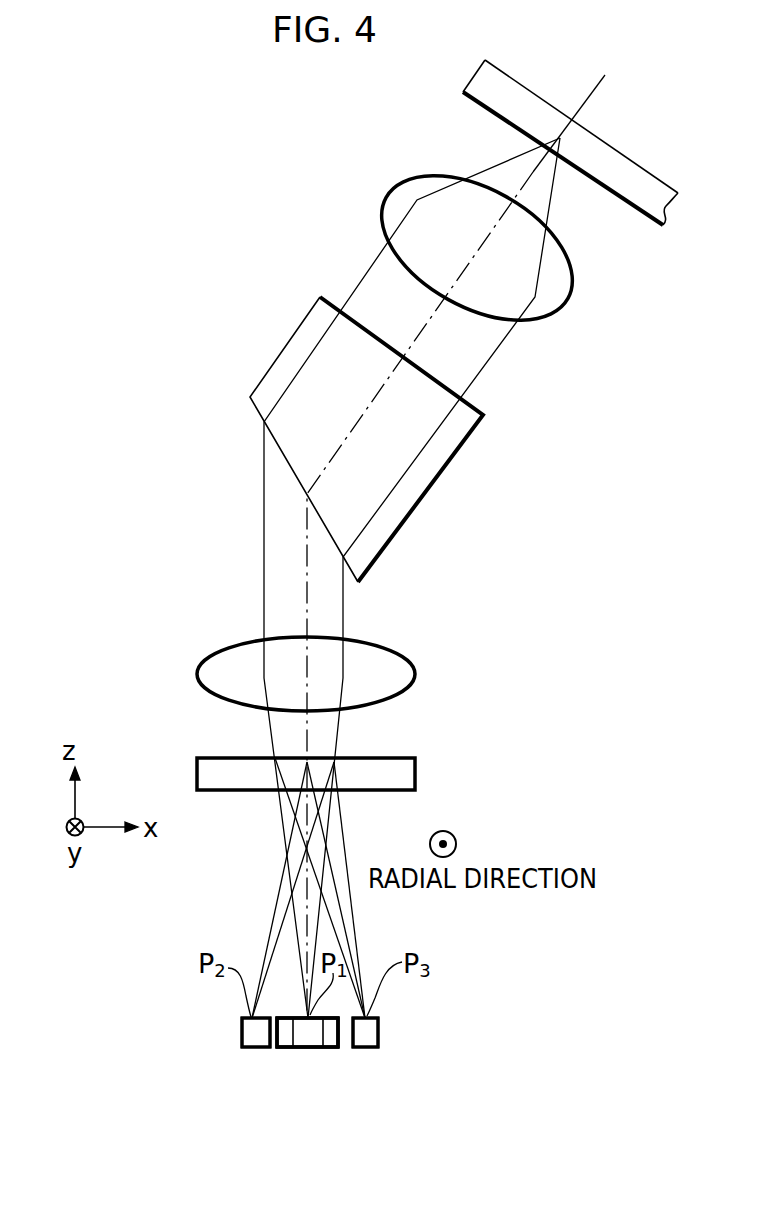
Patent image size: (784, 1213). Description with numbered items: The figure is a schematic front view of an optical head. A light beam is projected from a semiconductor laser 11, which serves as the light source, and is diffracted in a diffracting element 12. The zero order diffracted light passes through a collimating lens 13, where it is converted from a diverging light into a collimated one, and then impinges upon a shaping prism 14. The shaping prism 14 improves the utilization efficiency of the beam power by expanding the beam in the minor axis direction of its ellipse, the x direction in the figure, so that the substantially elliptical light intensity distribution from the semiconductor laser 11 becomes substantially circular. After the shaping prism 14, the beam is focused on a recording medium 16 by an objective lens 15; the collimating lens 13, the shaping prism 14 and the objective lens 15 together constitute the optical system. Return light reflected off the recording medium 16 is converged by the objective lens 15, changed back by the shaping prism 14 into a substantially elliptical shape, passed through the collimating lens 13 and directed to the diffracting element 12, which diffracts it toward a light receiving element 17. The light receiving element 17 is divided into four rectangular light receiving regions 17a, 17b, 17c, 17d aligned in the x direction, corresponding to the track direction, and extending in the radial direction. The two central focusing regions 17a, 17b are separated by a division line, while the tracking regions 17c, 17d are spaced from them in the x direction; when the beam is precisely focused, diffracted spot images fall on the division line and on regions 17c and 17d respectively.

The semiconductor laser 11 is at (310, 1047).
The diffracting element 12 is at (403, 769).
The collimating lens 13 is at (401, 670).
The shaping prism 14 is at (446, 441).
The objective lens 15 is at (389, 196).
The recording medium 16 is at (495, 93).
The light receiving element 17 is at (214, 1033).
The light receiving region 17a is at (330, 1047).
The light receiving region 17b is at (307, 1032).
The light receiving region 17c is at (255, 1048).
The light receiving region 17d is at (378, 1032).